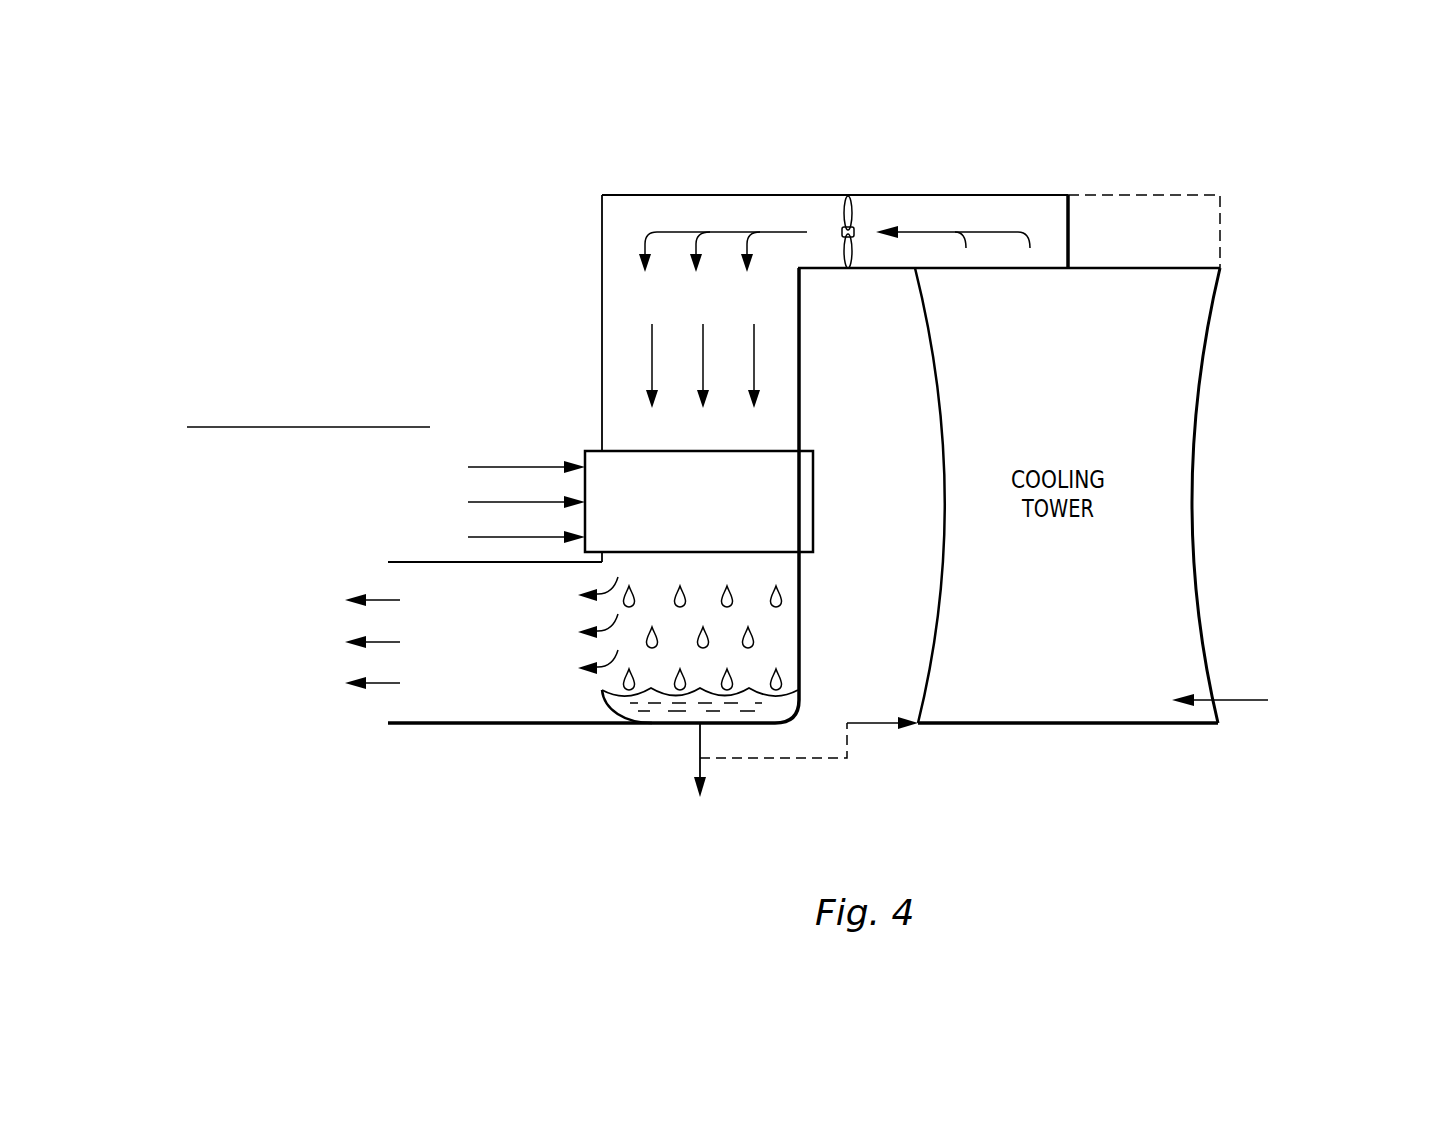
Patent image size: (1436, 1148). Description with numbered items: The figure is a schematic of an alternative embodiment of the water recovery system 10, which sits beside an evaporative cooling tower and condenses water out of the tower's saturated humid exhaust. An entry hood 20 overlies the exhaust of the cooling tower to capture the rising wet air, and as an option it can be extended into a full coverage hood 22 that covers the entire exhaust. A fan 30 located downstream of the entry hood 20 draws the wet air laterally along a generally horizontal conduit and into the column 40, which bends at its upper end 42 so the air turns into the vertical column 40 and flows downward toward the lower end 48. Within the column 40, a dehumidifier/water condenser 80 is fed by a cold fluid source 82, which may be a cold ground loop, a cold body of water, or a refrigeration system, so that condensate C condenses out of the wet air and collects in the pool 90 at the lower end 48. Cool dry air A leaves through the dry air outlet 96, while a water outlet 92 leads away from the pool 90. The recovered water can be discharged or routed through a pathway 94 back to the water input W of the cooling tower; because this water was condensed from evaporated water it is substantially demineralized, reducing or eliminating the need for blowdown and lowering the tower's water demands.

The water recovery system 10 is at (455, 250).
The entry hood 20 is at (1017, 213).
The full coverage hood 22 is at (1136, 190).
The fan 30 is at (853, 210).
The column 40 is at (768, 359).
The upper end 42 is at (602, 268).
The lower end 48 is at (800, 687).
The dehumidifier/water condenser 80 is at (813, 531).
The cold fluid source 82 is at (270, 379).
The pool 90 is at (755, 713).
The water outlet 92 is at (698, 750).
The pathway 94 is at (771, 759).
The dry air outlet 96 is at (362, 727).
The dry air inlet A is at (1233, 700).
The water input W is at (867, 723).
The condensate C is at (731, 594).